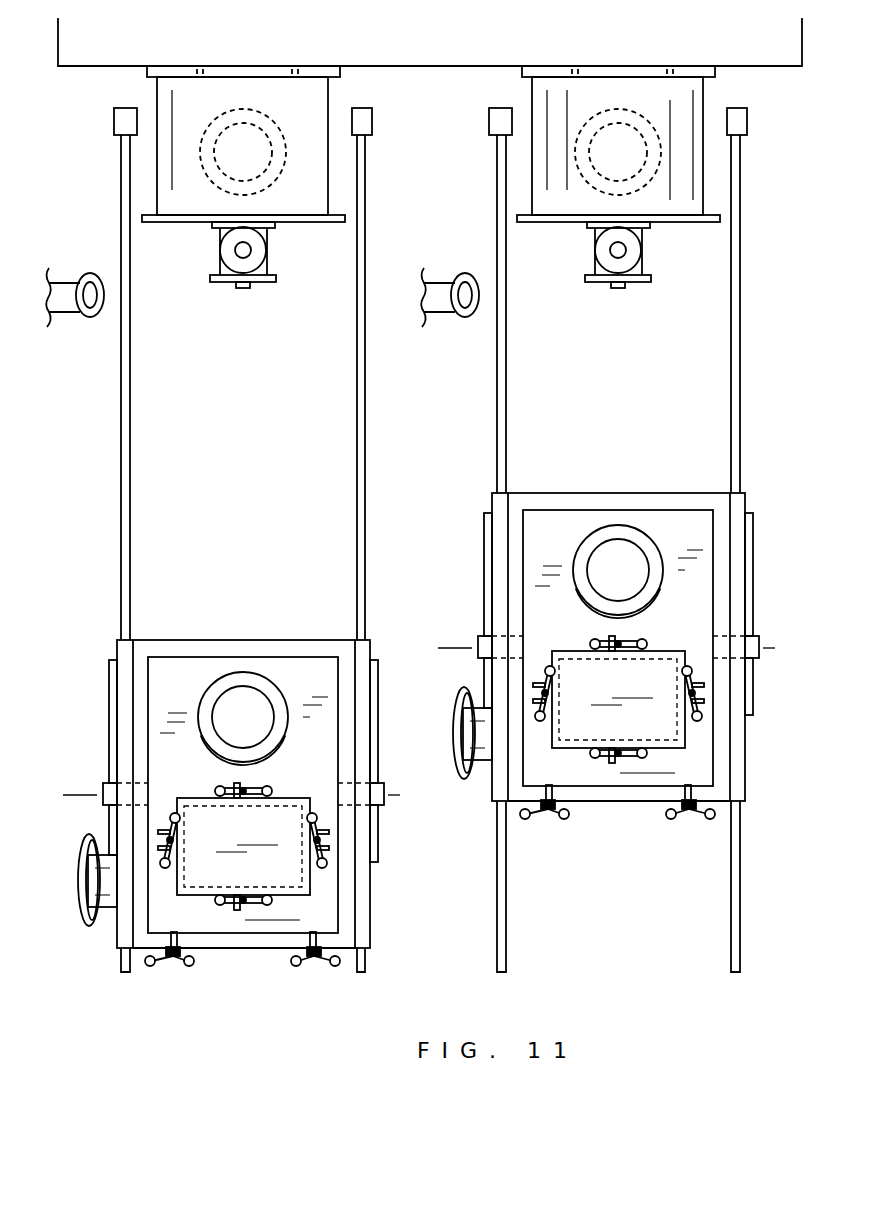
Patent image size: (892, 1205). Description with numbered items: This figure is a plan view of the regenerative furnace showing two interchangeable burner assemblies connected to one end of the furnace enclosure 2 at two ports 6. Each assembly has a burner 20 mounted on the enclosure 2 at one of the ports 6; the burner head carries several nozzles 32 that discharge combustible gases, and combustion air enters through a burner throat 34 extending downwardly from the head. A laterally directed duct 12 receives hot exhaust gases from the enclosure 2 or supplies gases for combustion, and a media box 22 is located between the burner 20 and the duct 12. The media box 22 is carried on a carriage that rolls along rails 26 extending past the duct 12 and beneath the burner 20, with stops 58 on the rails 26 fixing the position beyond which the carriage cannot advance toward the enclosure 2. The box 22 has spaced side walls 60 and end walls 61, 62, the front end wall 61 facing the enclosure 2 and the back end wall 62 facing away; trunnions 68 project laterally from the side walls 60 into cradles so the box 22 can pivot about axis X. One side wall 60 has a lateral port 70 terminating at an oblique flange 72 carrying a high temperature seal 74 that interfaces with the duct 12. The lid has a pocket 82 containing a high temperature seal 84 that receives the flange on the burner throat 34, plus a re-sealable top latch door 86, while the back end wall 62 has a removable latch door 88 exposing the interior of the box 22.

The furnace enclosure 2 is at (770, 68).
The port 6 is at (276, 72).
The lateral duct 12 is at (68, 284).
The burner 20 is at (305, 152).
The media box 22 is at (259, 628).
The rails 26 is at (131, 535).
The nozzles 32 is at (216, 232).
The burner throat 34 is at (277, 170).
The stops 58 is at (114, 125).
The side walls 60 is at (132, 667).
The front end wall 61 is at (218, 640).
The back end wall 62 is at (330, 935).
The trunnions 68 is at (110, 790).
The port 70 is at (108, 900).
The flange 72 is at (80, 838).
The high temperature seal 74 is at (93, 318).
The pocket 82 is at (227, 700).
The high temperature seal 84 is at (268, 690).
The top latch door 86 is at (213, 860).
The latch door 88 is at (260, 942).